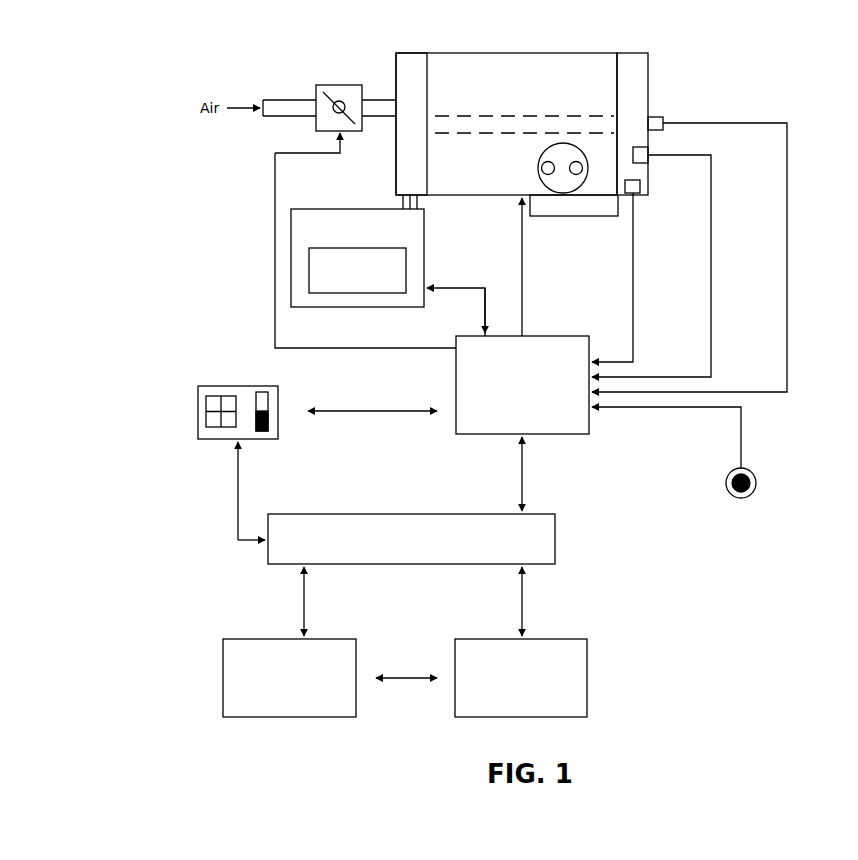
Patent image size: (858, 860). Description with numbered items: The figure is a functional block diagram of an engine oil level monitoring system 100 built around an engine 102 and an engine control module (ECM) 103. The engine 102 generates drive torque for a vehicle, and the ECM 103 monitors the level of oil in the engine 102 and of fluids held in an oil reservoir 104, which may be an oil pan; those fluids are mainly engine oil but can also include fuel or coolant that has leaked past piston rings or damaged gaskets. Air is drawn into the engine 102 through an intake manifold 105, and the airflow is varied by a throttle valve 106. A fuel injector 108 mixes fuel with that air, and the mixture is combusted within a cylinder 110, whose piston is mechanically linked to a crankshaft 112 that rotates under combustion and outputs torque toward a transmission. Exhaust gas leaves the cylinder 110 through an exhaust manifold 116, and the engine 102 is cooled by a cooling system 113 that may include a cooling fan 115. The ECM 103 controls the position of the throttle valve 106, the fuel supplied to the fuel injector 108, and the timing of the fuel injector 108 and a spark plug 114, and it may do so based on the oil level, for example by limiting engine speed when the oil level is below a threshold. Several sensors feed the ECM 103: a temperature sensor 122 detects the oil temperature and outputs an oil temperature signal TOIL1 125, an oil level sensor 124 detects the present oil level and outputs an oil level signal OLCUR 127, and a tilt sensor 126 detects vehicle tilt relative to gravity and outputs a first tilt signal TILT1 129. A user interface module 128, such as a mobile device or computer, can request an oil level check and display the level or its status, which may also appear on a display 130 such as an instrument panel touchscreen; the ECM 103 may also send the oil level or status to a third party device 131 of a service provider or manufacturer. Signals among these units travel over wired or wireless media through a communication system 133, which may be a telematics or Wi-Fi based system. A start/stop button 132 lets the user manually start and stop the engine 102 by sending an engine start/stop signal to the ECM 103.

The engine oil level monitoring system 100 is at (104, 90).
The engine 102 is at (520, 53).
The engine control module (ECM) 103 is at (560, 336).
The oil reservoir 104 is at (626, 53).
The intake manifold 105 is at (410, 53).
The throttle valve 106 is at (340, 84).
The fuel injector 108 is at (540, 172).
The cylinder 110 is at (536, 163).
The crankshaft 112 is at (570, 110).
The cooling system 113 is at (424, 236).
The spark plug 114 is at (574, 162).
The cooling fan 115 is at (406, 270).
The exhaust manifold 116 is at (580, 217).
The temperature sensor 122 is at (643, 193).
The oil level sensor 124 is at (650, 164).
The oil temperature signal TOIL1 125 is at (633, 260).
The tilt sensor 126 is at (666, 117).
The oil level signal OLCUR 127 is at (712, 213).
The user interface module (UIM) 128 is at (274, 639).
The first tilt signal TILT1 129 is at (788, 167).
The display 130 is at (238, 386).
The third party device 131 is at (558, 639).
The start/stop button 132 is at (757, 483).
The communication system 133 is at (556, 525).